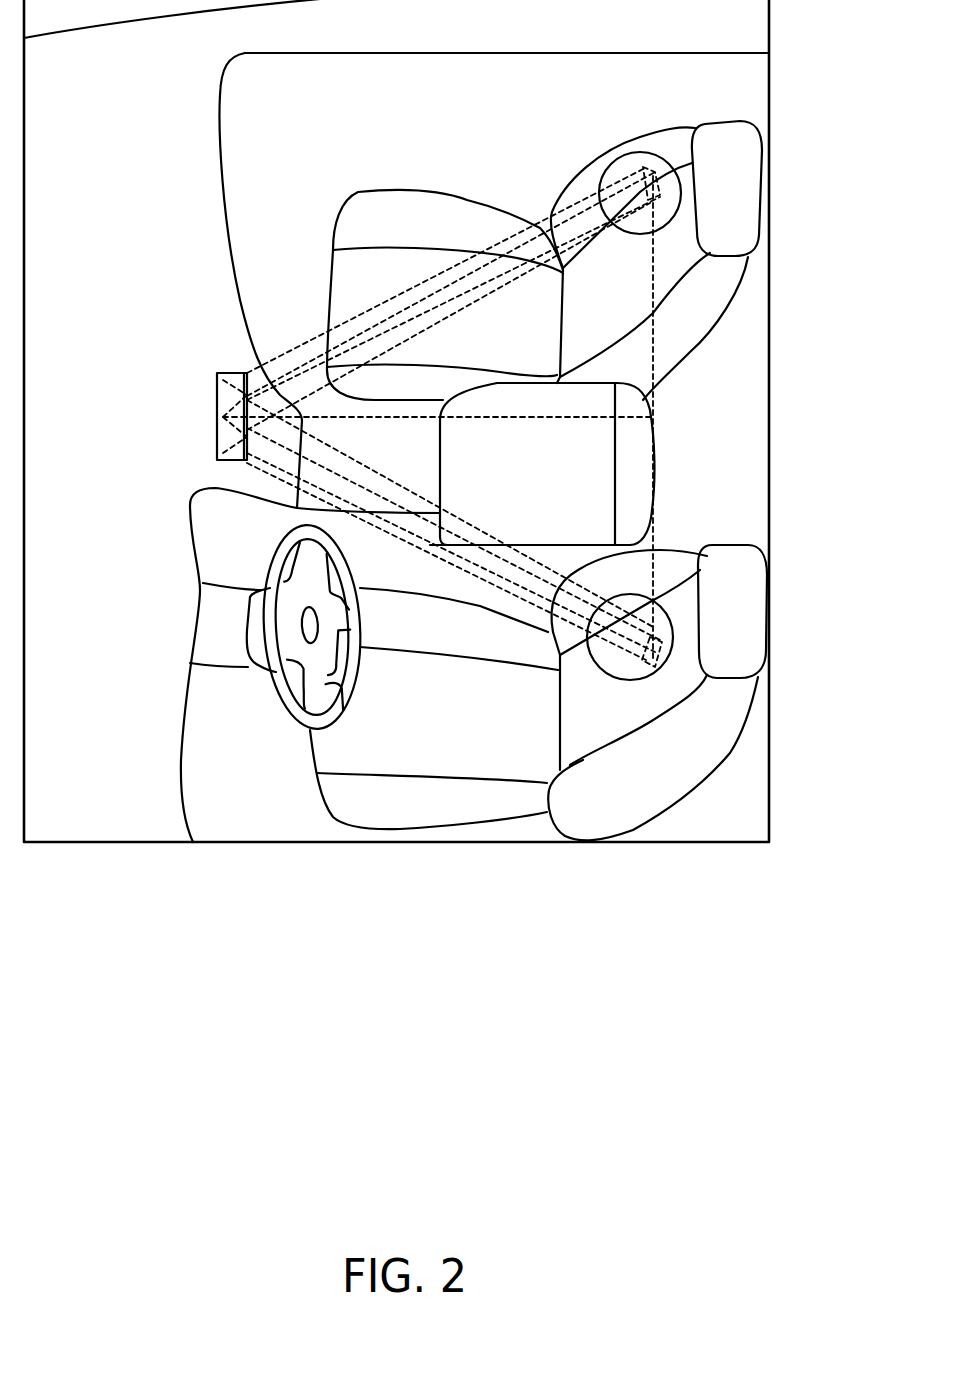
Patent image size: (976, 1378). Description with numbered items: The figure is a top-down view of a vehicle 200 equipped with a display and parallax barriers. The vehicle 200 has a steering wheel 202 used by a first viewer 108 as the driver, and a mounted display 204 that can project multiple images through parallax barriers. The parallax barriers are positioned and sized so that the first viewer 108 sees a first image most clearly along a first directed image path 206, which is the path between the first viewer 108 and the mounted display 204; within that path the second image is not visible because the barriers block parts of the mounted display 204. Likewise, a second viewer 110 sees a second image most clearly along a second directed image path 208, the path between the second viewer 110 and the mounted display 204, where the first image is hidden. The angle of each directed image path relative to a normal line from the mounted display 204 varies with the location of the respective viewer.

The vehicle 200 is at (427, 1240).
The steering wheel 202 is at (307, 730).
The mounted display 204 is at (217, 387).
The first directed image path 206 is at (483, 540).
The second directed image path 208 is at (340, 322).
The second viewer 110 is at (655, 162).
The first viewer 108 is at (673, 658).